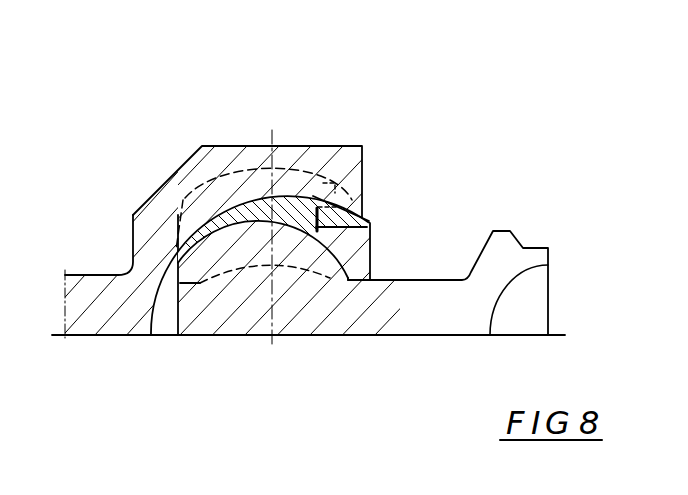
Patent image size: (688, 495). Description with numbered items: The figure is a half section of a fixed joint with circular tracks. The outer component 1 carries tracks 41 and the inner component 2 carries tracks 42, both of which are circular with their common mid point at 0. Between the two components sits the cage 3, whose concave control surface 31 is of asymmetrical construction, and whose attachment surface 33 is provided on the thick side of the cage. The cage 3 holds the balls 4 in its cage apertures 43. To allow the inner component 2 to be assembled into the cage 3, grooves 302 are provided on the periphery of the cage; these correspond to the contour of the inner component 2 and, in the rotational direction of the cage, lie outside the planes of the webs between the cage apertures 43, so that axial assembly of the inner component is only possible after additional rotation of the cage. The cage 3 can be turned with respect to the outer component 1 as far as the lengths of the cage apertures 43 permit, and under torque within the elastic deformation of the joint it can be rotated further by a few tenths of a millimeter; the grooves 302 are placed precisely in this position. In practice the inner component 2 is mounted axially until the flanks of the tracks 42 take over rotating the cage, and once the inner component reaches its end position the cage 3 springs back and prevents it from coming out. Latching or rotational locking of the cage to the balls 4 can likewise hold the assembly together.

The outer component 1 is at (183, 185).
The inner component 2 is at (203, 322).
The cage 3 is at (316, 210).
The grooves 302 is at (370, 223).
The concave control surface 31 is at (211, 236).
The attachment surface 33 is at (338, 240).
The balls 4 is at (236, 185).
The tracks of the outer component 41 is at (313, 197).
The tracks of the inner component 42 is at (300, 262).
The cage apertures 43 is at (313, 198).
The mid point 0 is at (264, 246).